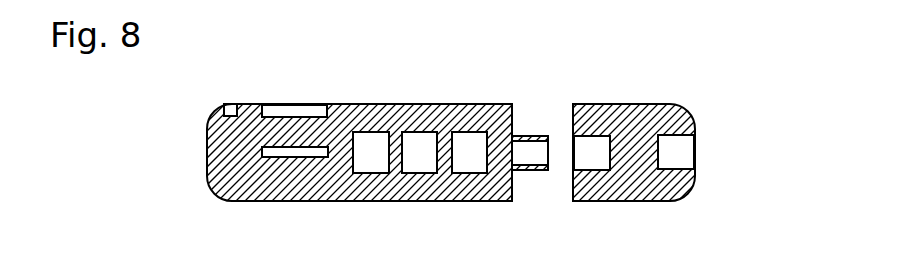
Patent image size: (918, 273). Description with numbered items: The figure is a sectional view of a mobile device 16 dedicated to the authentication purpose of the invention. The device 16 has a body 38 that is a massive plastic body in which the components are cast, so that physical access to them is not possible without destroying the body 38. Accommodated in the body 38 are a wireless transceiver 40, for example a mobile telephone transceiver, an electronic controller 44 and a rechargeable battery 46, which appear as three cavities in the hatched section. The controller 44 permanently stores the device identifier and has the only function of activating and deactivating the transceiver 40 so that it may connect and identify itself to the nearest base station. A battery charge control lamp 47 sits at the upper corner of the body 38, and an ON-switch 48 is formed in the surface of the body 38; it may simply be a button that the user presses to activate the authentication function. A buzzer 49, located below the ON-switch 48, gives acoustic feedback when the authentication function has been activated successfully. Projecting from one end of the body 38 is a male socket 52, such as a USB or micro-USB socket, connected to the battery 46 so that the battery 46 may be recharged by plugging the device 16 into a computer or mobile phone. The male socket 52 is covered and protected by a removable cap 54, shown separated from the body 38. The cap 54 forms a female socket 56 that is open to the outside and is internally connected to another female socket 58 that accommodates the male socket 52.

The mobile device 16 is at (717, 83).
The body 38 is at (207, 155).
The wireless transceiver 40 is at (370, 137).
The electronic controller 44 is at (417, 137).
The rechargeable battery 46 is at (473, 137).
The battery charge control lamp 47 is at (230, 105).
The ON-switch 48 is at (295, 105).
The buzzer 49 is at (295, 157).
The male socket 52 is at (525, 136).
The removable cap 54 is at (683, 190).
The female socket 56 is at (669, 150).
The female socket 58 is at (595, 137).